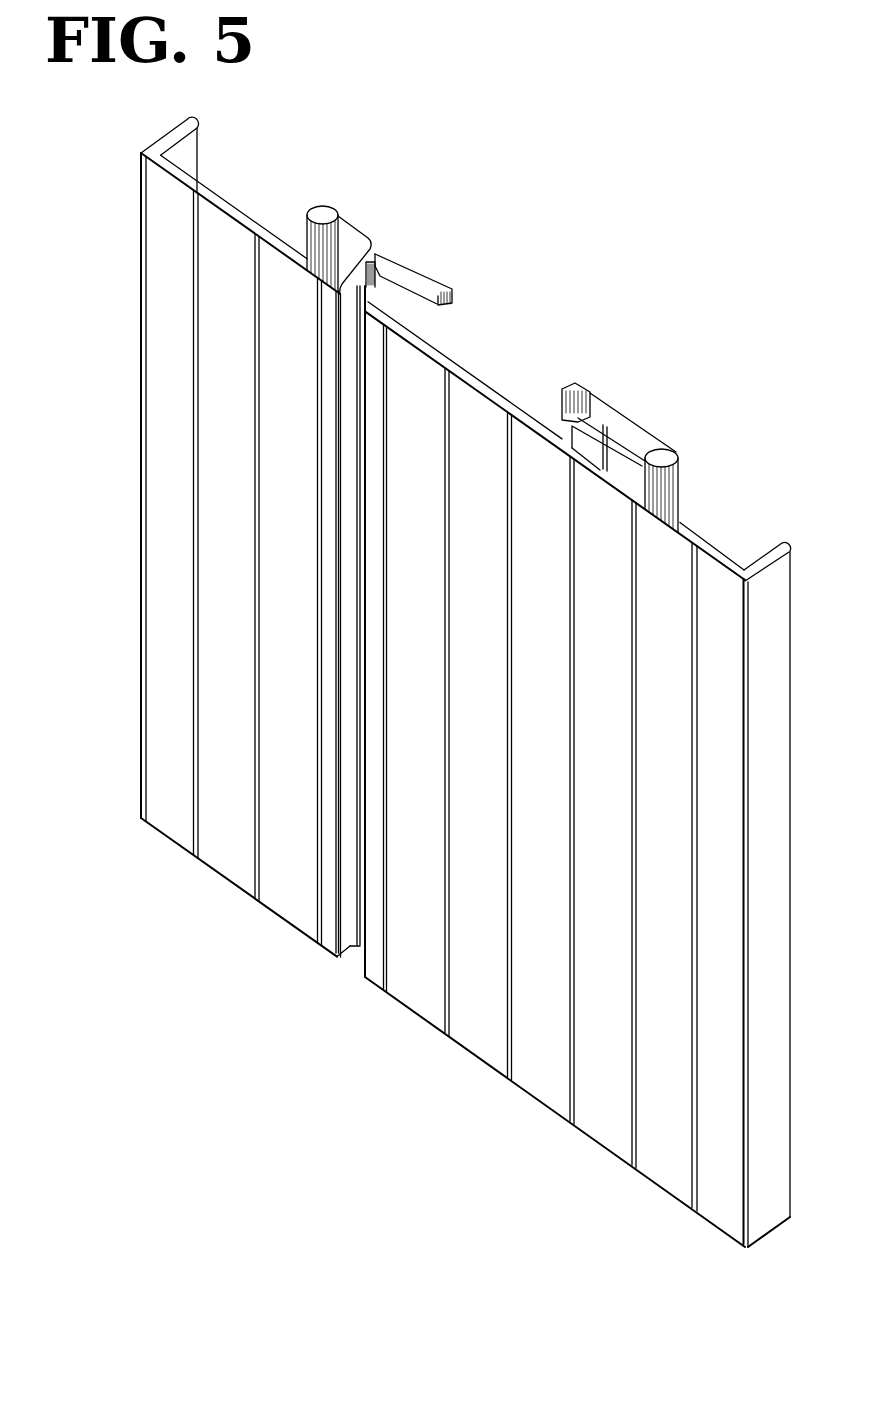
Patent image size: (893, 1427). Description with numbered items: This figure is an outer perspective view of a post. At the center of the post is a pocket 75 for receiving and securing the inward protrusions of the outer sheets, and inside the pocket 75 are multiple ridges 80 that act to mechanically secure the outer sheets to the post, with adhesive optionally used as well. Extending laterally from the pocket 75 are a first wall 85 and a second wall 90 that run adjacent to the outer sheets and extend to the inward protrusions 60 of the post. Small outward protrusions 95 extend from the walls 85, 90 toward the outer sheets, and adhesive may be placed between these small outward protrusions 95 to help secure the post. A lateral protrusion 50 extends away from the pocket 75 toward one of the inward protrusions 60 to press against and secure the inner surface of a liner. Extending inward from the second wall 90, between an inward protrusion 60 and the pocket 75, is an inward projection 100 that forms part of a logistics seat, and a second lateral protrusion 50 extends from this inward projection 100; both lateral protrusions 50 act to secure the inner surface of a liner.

The lateral protrusion 50 is at (322, 210).
The inward protrusion 60 is at (186, 126).
The pocket 75 is at (400, 268).
The ridge 80 is at (372, 263).
The first wall 85 is at (172, 412).
The second wall 90 is at (543, 1052).
The small outward protrusion 95 is at (141, 331).
The inward projection 100 is at (602, 408).